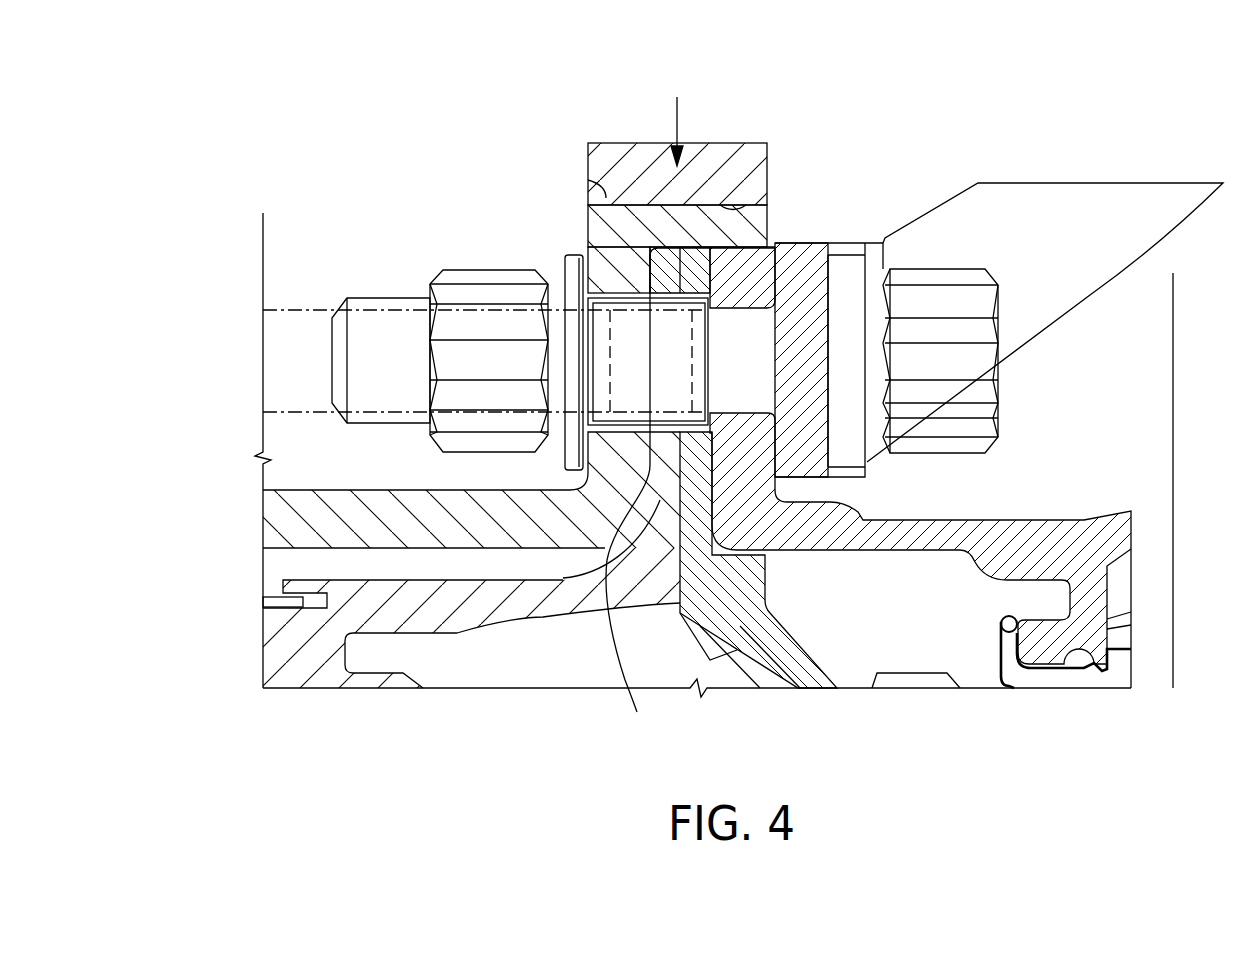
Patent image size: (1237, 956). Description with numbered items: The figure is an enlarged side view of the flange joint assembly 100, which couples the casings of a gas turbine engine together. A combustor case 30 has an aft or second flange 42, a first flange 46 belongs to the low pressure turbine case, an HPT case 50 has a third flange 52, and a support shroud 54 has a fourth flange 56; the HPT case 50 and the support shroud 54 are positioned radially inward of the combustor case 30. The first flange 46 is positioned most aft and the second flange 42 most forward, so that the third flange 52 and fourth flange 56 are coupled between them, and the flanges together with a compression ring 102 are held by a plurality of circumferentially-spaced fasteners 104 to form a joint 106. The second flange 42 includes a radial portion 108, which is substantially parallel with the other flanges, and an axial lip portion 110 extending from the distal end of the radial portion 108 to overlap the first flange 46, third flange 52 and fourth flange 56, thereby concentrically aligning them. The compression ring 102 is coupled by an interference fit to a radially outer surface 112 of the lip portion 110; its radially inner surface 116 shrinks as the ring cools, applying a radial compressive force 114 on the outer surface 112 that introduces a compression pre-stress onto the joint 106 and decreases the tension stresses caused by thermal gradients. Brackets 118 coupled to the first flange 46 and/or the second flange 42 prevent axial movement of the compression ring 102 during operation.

The flange joint assembly 100 is at (402, 110).
The compression ring 102 is at (608, 143).
The fasteners 104 is at (978, 443).
The joint 106 is at (793, 158).
The radial portion 108 is at (617, 443).
The axial lip portion 110 is at (737, 227).
The radially outer surface 112 is at (604, 192).
The compressive force 114 is at (680, 100).
The radially inner surface 116 is at (733, 203).
The brackets 118 is at (1032, 302).
The combustor case 30 is at (285, 518).
The second flange 42 is at (615, 276).
The first flange 46 is at (867, 460).
The HPT case 50 is at (298, 648).
The third flange 52 is at (628, 496).
The support shroud 54 is at (798, 670).
The fourth flange 56 is at (697, 498).